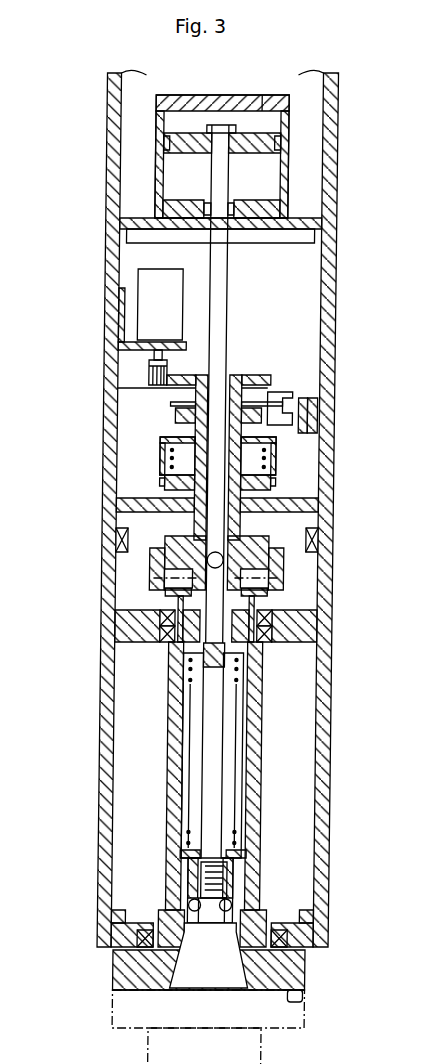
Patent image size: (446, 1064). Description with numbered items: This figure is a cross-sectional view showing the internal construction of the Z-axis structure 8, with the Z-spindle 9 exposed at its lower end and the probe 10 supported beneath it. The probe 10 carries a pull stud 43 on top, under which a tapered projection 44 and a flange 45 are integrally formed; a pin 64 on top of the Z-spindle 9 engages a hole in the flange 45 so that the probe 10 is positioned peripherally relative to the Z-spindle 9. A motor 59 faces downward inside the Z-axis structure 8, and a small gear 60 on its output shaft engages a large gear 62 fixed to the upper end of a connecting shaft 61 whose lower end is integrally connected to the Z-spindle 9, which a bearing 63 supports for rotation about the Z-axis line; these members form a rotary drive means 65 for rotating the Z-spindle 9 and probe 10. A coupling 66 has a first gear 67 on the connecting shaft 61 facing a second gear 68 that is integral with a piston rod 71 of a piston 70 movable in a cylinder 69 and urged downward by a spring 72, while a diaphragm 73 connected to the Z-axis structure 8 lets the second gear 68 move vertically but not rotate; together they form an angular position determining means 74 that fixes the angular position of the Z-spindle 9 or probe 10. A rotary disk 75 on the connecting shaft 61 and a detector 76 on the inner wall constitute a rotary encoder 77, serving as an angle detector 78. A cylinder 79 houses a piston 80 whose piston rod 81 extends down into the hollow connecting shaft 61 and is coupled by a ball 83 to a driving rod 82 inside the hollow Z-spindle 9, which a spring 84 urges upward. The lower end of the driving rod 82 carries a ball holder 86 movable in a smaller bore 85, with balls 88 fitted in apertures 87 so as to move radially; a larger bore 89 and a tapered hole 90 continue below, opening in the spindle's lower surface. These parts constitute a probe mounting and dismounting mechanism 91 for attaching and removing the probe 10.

The Z-axis structure 8 is at (110, 432).
The Z-spindle 9 is at (176, 742).
The probe 10 is at (99, 1017).
The pull stud 43 is at (240, 880).
The tapered projection 44 is at (266, 967).
The flange 45 is at (297, 1028).
The motor 59 is at (143, 283).
The small gear 60 is at (148, 378).
The connecting shaft 61 is at (165, 400).
The large gear 62 is at (250, 374).
The bearing 63 is at (135, 630).
The pin 64 is at (309, 1000).
The rotary drive means 65 is at (150, 362).
The coupling 66 is at (396, 552).
The first gear 67 is at (264, 582).
The second gear 68 is at (225, 558).
The cylinder 69 is at (272, 480).
The piston 70 is at (276, 487).
The piston rod 71 is at (318, 508).
The spring 72 is at (278, 443).
The diaphragm 73 is at (144, 538).
The angular position determining means 74 is at (146, 564).
The rotary disk 75 is at (289, 392).
The detector 76 is at (307, 425).
The rotary encoder 77 is at (285, 404).
The angle detector 78 is at (316, 405).
The cylinder 79 is at (279, 118).
The piston 80 is at (281, 172).
The piston rod 81 is at (216, 262).
The driving rod 82 is at (226, 728).
The ball 83 is at (232, 632).
The spring 84 is at (263, 665).
The smaller bore 85 is at (190, 866).
The ball holder 86 is at (240, 875).
The apertures 87 is at (240, 912).
The balls 88 is at (392, 895).
The larger bore 89 is at (251, 928).
The tapered hole 90 is at (241, 975).
The probe mounting and dismounting mechanism 91 is at (120, 914).